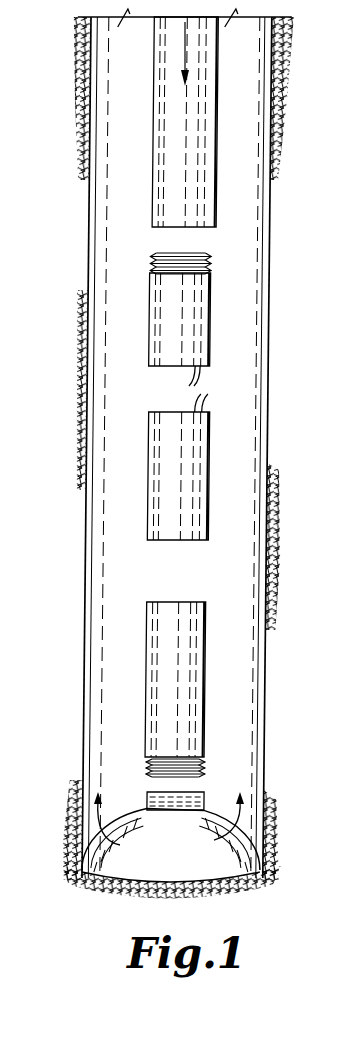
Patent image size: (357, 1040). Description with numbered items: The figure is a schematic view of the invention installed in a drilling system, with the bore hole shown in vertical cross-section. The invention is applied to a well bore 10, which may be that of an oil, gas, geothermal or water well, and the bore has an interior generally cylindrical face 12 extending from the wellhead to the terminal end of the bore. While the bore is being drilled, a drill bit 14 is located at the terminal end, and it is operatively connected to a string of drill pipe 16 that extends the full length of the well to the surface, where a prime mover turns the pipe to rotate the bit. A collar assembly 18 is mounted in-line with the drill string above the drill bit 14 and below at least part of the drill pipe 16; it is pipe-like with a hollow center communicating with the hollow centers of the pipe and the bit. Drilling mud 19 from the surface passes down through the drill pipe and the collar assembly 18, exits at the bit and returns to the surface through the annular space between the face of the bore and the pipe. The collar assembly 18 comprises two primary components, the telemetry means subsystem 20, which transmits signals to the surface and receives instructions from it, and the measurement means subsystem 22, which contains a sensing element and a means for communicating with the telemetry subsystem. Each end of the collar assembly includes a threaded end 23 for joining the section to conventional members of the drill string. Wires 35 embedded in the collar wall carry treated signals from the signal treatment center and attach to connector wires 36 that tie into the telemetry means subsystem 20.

The well bore 10 is at (114, 205).
The interior cylindrical face 12 is at (274, 240).
The drill bit 14 is at (227, 868).
The drill pipe 16 is at (207, 122).
The collar assembly 18 is at (66, 777).
The drilling mud 19 is at (186, 43).
The telemetry means subsystem 20 is at (199, 512).
The measurement means subsystem 22 is at (212, 310).
The threaded end 23 is at (150, 258).
The wires 35 is at (203, 377).
The connector wires 36 is at (207, 397).